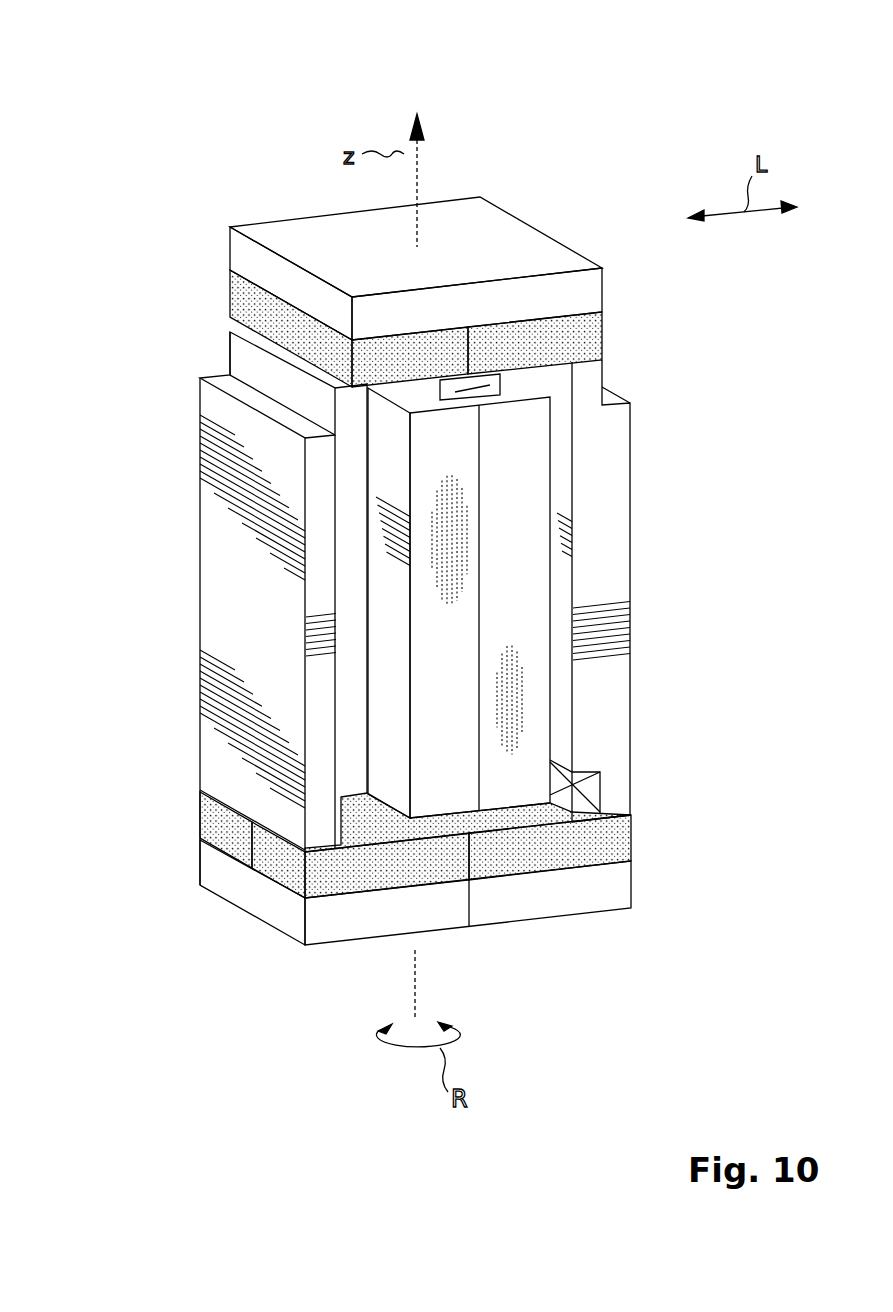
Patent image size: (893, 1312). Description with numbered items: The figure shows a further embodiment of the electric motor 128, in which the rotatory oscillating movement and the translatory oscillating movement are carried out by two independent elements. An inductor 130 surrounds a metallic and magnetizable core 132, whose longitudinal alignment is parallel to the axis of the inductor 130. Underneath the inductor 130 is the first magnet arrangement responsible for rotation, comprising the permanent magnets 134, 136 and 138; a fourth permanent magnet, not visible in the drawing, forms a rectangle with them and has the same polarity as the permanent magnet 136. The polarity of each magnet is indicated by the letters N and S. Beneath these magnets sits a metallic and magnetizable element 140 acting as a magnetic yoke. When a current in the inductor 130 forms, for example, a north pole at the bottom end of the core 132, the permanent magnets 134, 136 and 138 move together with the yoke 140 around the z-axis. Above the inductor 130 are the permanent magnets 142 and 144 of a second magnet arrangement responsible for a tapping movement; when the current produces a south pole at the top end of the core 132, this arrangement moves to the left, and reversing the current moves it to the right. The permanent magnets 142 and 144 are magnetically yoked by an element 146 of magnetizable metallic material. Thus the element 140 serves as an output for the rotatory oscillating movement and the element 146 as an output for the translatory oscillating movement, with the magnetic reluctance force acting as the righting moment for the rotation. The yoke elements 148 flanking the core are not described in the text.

The electric motor 128 is at (639, 98).
The inductor 130 is at (517, 503).
The core 132 is at (435, 380).
The permanent magnet 134 is at (603, 840).
The permanent magnet 136 is at (285, 870).
The permanent magnet 138 is at (202, 819).
The metallic and magnetizable element 140 is at (558, 902).
The permanent magnet 142 is at (602, 343).
The permanent magnet 144 is at (230, 300).
The element 146 is at (513, 238).
The yoke 148 is at (335, 590).